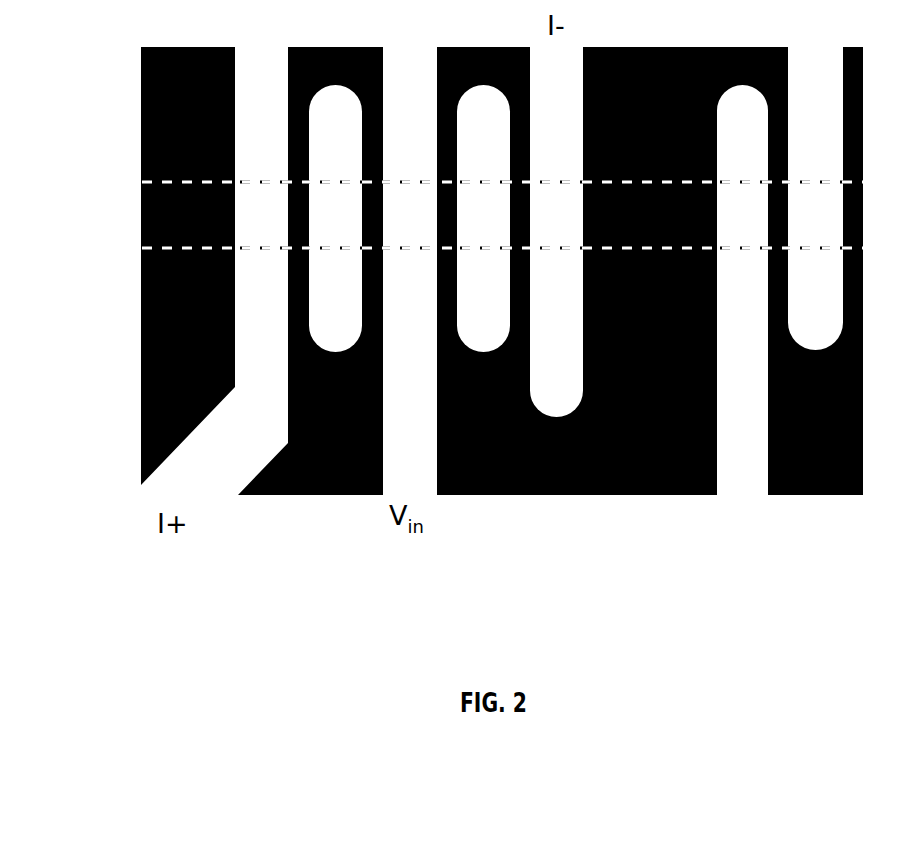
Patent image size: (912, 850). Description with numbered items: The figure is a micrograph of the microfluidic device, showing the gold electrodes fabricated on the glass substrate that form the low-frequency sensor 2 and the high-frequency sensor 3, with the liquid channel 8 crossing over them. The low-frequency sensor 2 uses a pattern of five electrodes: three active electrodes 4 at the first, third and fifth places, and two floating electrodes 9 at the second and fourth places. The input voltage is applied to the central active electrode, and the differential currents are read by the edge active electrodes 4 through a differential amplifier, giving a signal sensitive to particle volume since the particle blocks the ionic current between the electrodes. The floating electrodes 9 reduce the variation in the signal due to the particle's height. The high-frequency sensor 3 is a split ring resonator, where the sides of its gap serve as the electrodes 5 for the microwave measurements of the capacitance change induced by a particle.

The low-frequency sensor 2 is at (122, 563).
The high-frequency sensor 3 is at (865, 563).
The active electrodes for low-frequency sensor 4 is at (362, 271).
The electrodes for high-frequency sensor 5 is at (780, 271).
The liquid channel 8 is at (122, 175).
The floating electrodes 9 is at (409, 218).